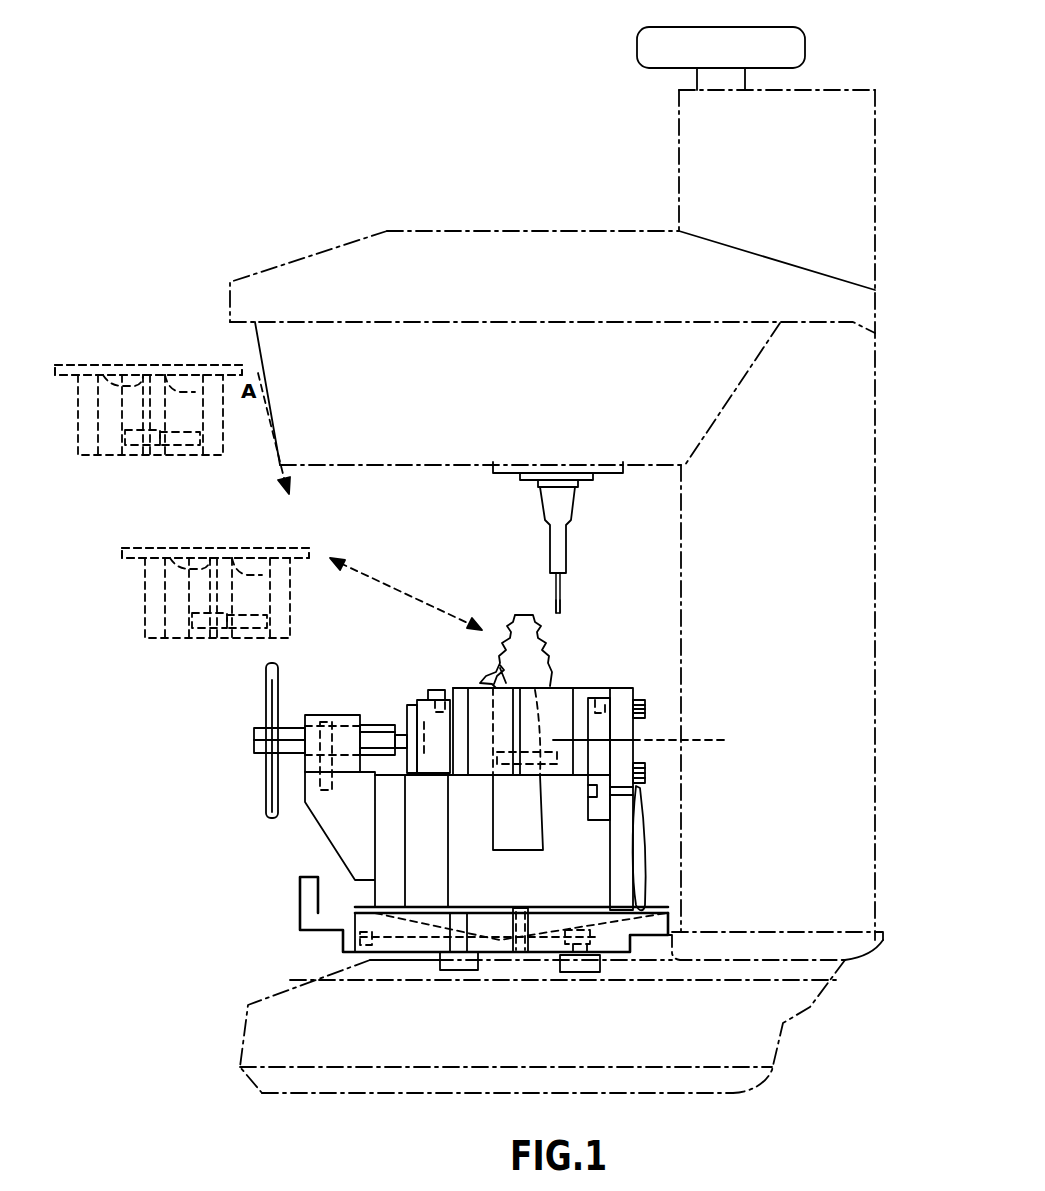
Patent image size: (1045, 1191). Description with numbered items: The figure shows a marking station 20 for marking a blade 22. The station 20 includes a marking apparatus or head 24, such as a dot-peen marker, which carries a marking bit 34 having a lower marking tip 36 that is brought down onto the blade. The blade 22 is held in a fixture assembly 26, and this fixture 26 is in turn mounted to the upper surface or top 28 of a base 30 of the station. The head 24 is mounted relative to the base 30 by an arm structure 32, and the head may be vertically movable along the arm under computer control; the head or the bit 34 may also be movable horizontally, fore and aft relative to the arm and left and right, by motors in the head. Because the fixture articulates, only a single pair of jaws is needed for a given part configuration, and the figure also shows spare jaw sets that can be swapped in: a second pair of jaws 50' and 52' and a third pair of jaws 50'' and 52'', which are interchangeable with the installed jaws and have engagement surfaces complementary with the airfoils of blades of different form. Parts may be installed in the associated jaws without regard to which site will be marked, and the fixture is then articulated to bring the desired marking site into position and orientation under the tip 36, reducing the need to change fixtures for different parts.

The marking station 20 is at (442, 110).
The blade 22 is at (560, 674).
The marking apparatus or head 24 is at (498, 230).
The fixture assembly 26 is at (247, 789).
The upper surface or top 28 is at (713, 960).
The base 30 is at (649, 1040).
The arm structure 32 is at (788, 766).
The marking bit 34 is at (557, 588).
The lower marking tip 36 is at (558, 613).
The second pair of jaws (first jaw) 50' is at (232, 529).
The third pair of jaws (first jaw) 50'' is at (188, 353).
The second pair of jaws (second jaw) 52' is at (213, 564).
The third pair of jaws (second jaw) 52'' is at (146, 380).